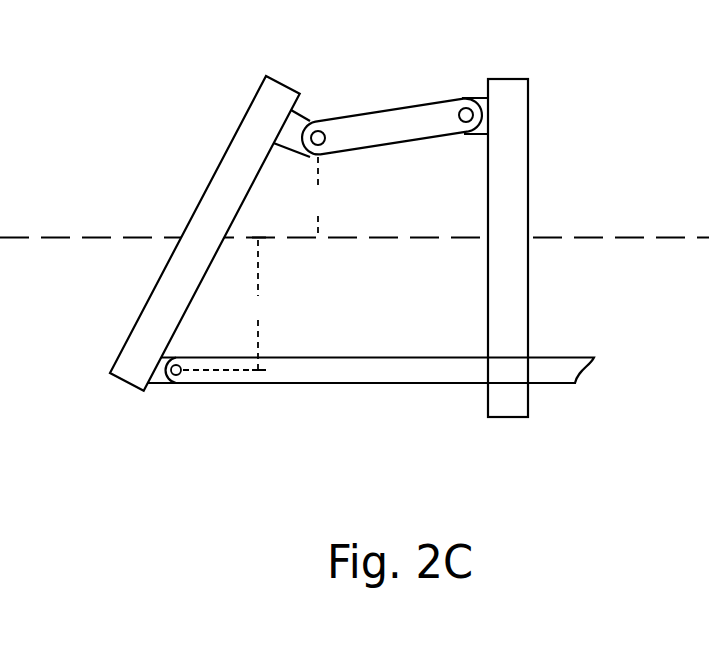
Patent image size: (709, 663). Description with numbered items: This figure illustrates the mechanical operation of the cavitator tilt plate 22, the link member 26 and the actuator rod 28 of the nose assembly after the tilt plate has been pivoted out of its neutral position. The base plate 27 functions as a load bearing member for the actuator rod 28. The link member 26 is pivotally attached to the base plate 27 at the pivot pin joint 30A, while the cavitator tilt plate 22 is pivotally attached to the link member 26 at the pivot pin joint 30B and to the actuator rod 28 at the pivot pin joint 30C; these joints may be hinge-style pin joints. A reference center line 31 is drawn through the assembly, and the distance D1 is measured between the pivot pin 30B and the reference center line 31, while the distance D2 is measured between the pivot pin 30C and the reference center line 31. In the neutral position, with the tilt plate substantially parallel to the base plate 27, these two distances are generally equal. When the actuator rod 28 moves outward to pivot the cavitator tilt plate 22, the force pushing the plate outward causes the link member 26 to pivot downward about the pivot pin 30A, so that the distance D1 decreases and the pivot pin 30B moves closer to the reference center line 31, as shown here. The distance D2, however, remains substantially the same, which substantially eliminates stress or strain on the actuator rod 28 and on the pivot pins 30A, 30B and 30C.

The cavitator tilt plate 22 is at (248, 110).
The link member 26 is at (389, 110).
The base plate 27 is at (528, 158).
The actuator rod 28 is at (373, 384).
The pivot pin joint 30A is at (462, 98).
The pivot pin joint 30B is at (318, 122).
The pivot pin joint 30C is at (183, 371).
The reference center line 31 is at (47, 240).
The distance D1 is at (322, 197).
The distance D2 is at (229, 304).